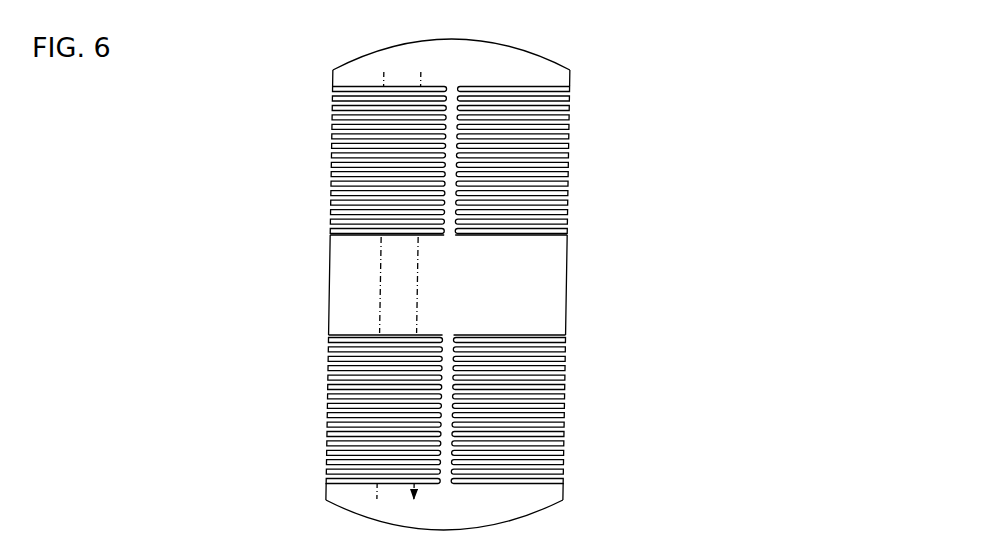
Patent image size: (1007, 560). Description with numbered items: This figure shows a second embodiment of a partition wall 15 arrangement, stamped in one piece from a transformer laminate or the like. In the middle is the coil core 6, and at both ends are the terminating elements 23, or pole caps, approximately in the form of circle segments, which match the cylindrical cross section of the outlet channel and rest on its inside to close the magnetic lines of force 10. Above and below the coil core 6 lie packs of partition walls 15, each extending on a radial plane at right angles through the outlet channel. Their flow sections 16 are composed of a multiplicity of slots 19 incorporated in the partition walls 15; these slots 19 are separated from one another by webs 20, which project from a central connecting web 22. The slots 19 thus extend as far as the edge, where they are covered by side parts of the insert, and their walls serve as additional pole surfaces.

The coil core 6 is at (544, 268).
The magnetic lines of force 10 is at (380, 265).
The partition wall 15 is at (540, 74).
The flow section 16 is at (563, 150).
The slot 19 is at (563, 338).
The web 20 is at (563, 353).
The central connecting web 22 is at (462, 488).
The pole cap 23 is at (528, 57).